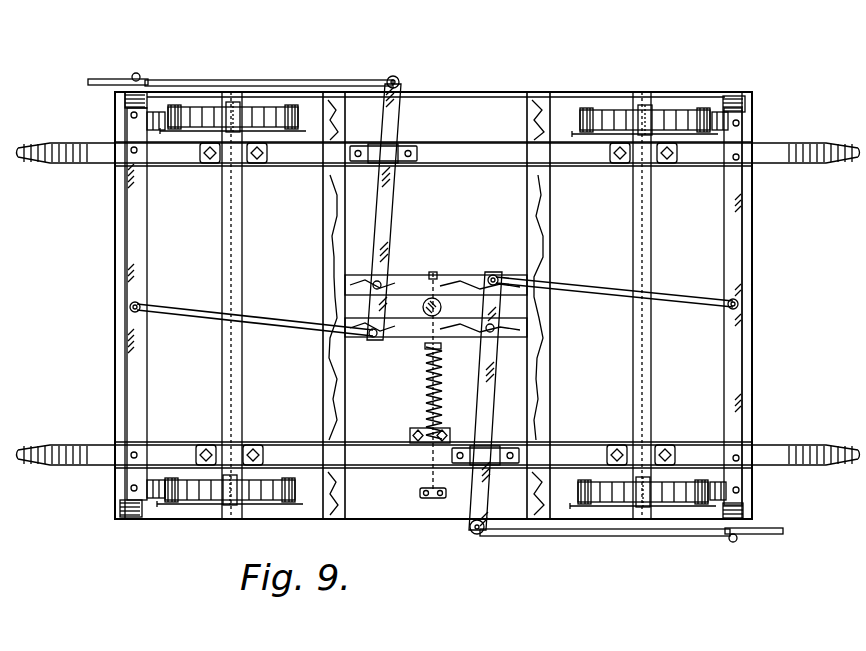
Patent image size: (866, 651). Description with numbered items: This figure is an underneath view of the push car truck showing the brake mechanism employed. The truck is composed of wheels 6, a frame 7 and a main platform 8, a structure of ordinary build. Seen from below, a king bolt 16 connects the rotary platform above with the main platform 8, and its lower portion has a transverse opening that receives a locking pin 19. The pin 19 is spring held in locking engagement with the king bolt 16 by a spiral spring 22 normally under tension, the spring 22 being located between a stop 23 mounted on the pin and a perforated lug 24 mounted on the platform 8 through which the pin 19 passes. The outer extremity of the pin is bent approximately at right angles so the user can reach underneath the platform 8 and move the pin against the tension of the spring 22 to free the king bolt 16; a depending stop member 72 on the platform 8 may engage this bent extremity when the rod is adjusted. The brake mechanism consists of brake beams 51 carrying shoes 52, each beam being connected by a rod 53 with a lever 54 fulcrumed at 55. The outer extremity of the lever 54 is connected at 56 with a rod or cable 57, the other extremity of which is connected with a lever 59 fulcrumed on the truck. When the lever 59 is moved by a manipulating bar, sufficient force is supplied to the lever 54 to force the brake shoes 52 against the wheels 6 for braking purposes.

The wheels 6 is at (258, 110).
The frame 7 is at (438, 304).
The main platform 8 is at (484, 98).
The king bolt 16 is at (423, 307).
The locking pin 19 is at (432, 273).
The spiral spring 22 is at (425, 382).
The stop 23 is at (424, 346).
The perforated lug 24 is at (427, 444).
The brake beams 51 is at (140, 250).
The shoes 52 is at (152, 130).
The rod 53 is at (264, 318).
The lever 54 is at (392, 112).
The fulcrum 55 is at (378, 280).
The connection 56 is at (396, 76).
The rod or cable 57 is at (212, 79).
The lever 59 is at (118, 79).
The depending stop member 72 is at (426, 499).